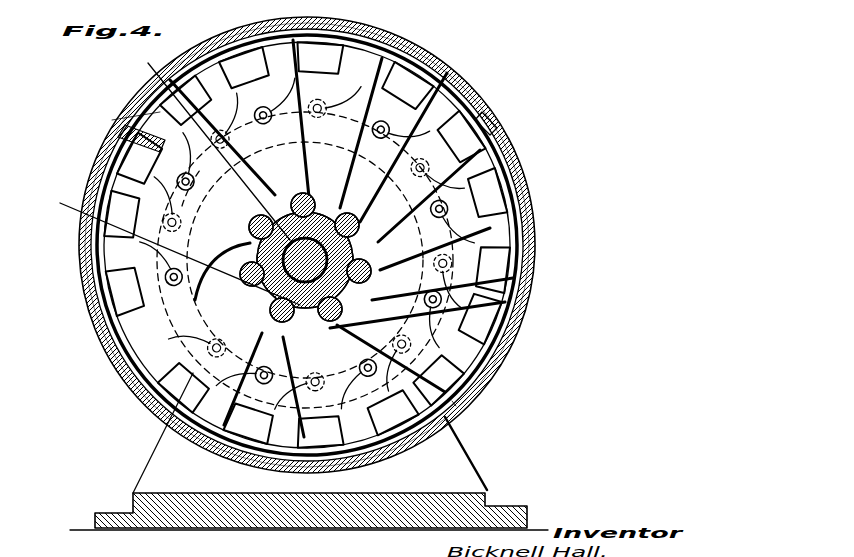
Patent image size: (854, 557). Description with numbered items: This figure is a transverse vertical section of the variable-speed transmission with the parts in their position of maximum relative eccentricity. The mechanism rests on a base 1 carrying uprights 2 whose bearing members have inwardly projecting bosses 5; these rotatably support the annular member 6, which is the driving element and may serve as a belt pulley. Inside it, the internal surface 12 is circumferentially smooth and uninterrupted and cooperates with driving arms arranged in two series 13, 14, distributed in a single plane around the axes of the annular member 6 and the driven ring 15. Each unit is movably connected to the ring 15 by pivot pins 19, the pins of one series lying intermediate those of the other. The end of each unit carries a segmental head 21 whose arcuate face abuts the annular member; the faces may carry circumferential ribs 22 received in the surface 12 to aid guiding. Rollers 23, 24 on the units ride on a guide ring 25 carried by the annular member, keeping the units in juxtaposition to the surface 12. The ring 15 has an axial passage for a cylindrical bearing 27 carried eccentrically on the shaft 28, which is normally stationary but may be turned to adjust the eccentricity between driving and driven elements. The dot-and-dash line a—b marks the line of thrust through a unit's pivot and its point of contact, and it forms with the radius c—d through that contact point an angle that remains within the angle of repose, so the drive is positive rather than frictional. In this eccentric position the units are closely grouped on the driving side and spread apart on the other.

The base 1 is at (152, 502).
The uprights 2 is at (463, 448).
The bosses 5 is at (368, 258).
The annular member 6 is at (448, 72).
The internal surface 12 is at (218, 66).
The driving units of the first series 13 is at (170, 150).
The driving units of the second series 14 is at (265, 78).
The ring 15 is at (272, 182).
The pivot pins 19 is at (200, 327).
The segmental head 21 is at (135, 135).
The circumferential ribs 22 is at (160, 125).
The rollers 23 is at (340, 95).
The rollers 24 is at (263, 112).
The guide ring 25 is at (247, 137).
The cylindrical bearing 27 is at (260, 240).
The shaft 28 is at (180, 205).
The line of thrust end point a is at (293, 279).
The line of thrust end point b is at (430, 382).
The radius line end point c is at (207, 145).
The radius line end point d is at (442, 397).